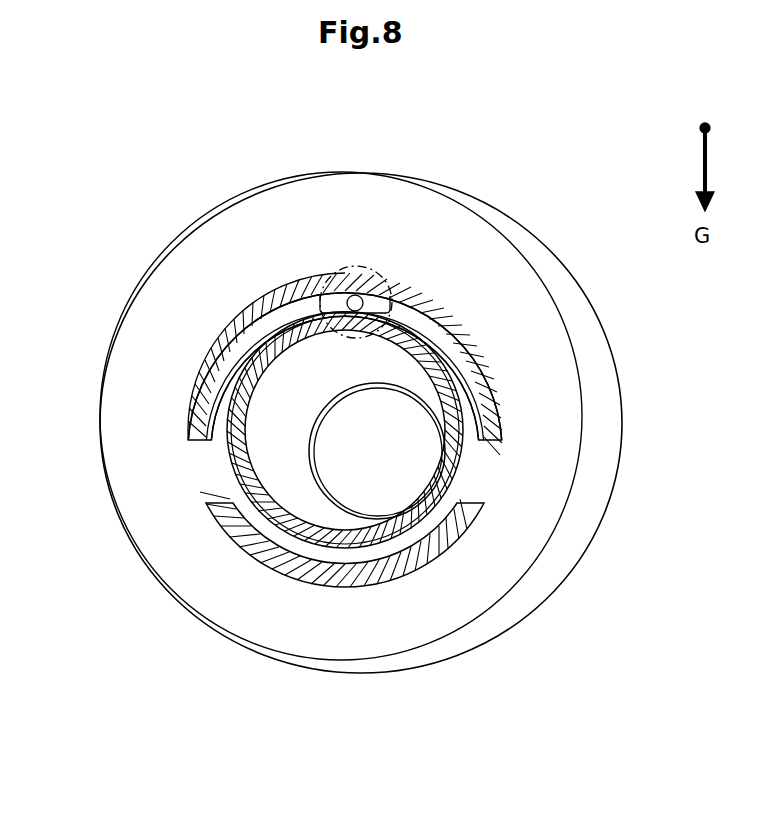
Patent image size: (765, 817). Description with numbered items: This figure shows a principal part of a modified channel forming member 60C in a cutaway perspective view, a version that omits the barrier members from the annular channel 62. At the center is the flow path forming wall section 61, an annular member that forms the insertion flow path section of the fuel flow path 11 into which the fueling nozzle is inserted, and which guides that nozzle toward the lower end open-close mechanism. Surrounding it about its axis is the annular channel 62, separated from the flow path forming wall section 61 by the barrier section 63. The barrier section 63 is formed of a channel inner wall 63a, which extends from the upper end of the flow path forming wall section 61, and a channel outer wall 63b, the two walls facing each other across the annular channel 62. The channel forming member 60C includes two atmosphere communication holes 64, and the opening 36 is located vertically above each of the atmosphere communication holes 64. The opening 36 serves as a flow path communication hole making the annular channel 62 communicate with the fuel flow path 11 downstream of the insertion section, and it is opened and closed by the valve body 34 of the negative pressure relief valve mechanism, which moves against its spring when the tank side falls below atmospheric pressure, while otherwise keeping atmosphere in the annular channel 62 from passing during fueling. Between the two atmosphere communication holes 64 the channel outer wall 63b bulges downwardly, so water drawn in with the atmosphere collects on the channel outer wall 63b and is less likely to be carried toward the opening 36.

The channel forming member 60C is at (203, 143).
The valve body 34 is at (364, 265).
The opening 36 is at (352, 291).
The annular channel 62 is at (236, 368).
The barrier section 63 is at (583, 93).
The channel inner wall 63a is at (387, 290).
The channel outer wall 63b is at (450, 307).
The atmosphere communication hole 64 is at (207, 502).
The flow path forming wall section 61 is at (275, 447).
The fuel flow path 11 is at (411, 459).